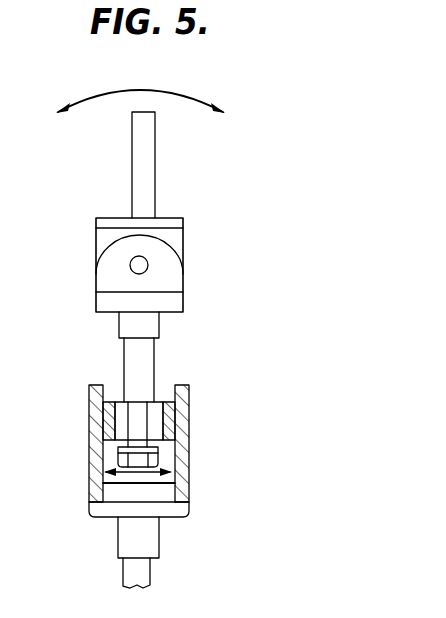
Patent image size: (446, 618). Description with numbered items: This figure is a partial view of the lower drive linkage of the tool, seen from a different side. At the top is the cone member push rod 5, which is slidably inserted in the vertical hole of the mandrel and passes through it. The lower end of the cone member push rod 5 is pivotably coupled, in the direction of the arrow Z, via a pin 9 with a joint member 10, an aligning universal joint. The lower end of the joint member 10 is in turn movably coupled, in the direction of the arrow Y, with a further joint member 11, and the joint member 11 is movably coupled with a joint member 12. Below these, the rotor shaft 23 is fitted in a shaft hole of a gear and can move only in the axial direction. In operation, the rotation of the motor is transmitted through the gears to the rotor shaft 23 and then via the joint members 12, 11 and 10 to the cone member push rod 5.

The cone member push rod 5 is at (148, 158).
The pin 9 is at (148, 264).
The joint member 10 is at (177, 305).
The joint member 11 is at (168, 426).
The joint member 12 is at (189, 470).
The rotor shaft 23 is at (146, 575).
The arrow Z is at (110, 92).
The arrow Y is at (100, 499).